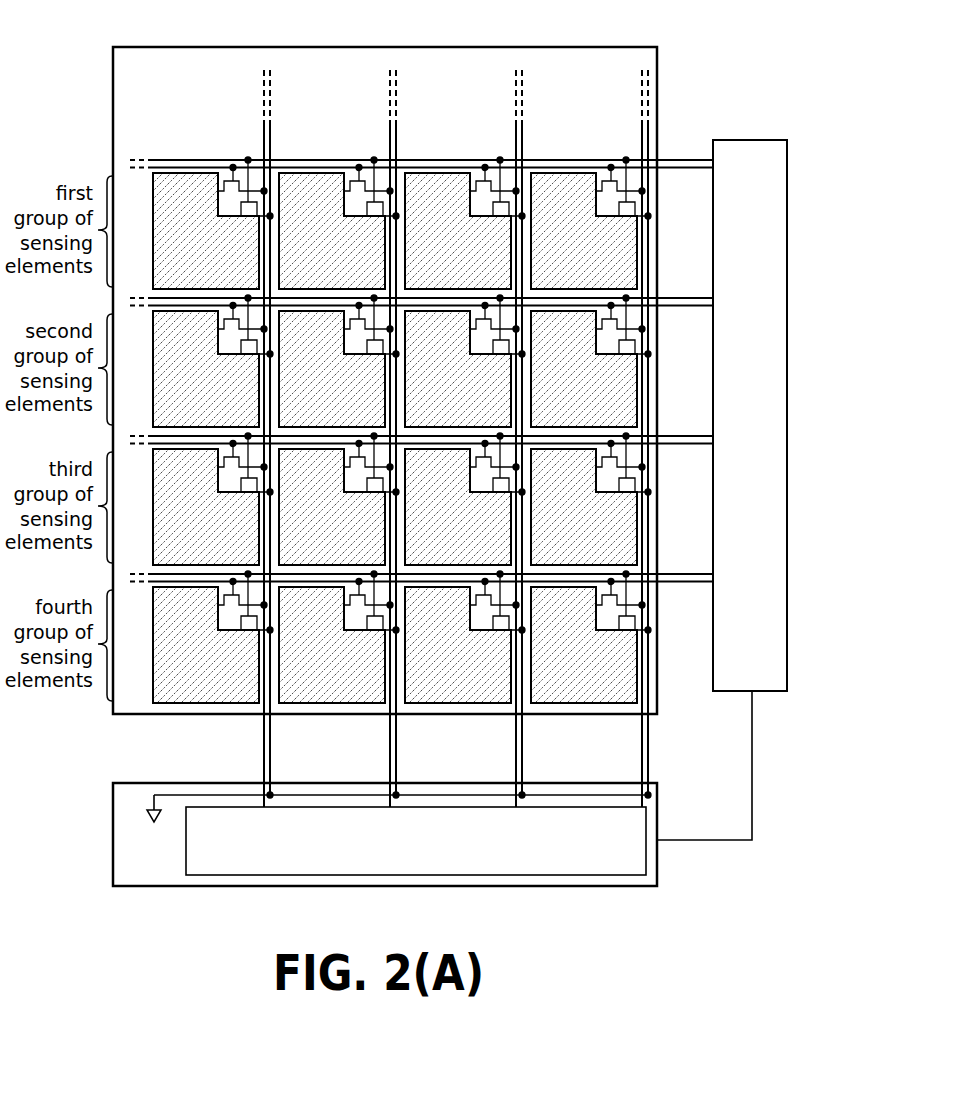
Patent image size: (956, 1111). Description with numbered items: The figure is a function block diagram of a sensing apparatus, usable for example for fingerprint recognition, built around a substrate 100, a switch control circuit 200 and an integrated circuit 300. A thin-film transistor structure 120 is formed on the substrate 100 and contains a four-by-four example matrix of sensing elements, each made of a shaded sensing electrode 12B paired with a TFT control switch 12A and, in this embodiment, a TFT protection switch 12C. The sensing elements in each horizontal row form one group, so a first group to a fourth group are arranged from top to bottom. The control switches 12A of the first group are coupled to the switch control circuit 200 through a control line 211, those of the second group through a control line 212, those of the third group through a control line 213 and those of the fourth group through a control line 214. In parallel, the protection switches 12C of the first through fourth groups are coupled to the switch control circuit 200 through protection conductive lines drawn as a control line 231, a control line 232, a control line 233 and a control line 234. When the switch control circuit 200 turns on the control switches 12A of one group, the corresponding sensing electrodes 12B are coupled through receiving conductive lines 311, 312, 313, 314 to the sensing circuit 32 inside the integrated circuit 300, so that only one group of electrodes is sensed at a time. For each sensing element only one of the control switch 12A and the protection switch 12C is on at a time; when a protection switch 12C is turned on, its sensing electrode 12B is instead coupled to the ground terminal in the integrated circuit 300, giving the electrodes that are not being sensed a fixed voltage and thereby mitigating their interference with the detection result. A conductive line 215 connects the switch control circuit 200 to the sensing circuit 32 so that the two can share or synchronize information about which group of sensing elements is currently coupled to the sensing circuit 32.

The substrate 100 is at (620, 47).
The thin-film transistor structure 120 is at (156, 76).
The TFT switch (control switch) 12A is at (230, 179).
The sensing electrode 12B is at (176, 244).
The TFT switch (protection switch) 12C is at (258, 200).
The switch control circuit 200 is at (745, 140).
The control line 211 is at (680, 169).
The control line 212 is at (680, 307).
The control line 213 is at (680, 445).
The control line 214 is at (680, 583).
The conductive line 215 is at (752, 756).
The control line (protection conductive line) 231 is at (678, 163).
The control line (protection conductive line) 232 is at (678, 301).
The control line (protection conductive line) 233 is at (678, 439).
The control line (protection conductive line) 234 is at (678, 577).
The integrated circuit 300 is at (113, 815).
The receiving conductive line 311 is at (264, 752).
The receiving conductive line 312 is at (390, 752).
The receiving conductive line 313 is at (516, 754).
The receiving conductive line 314 is at (642, 752).
The sensing circuit 32 is at (426, 876).